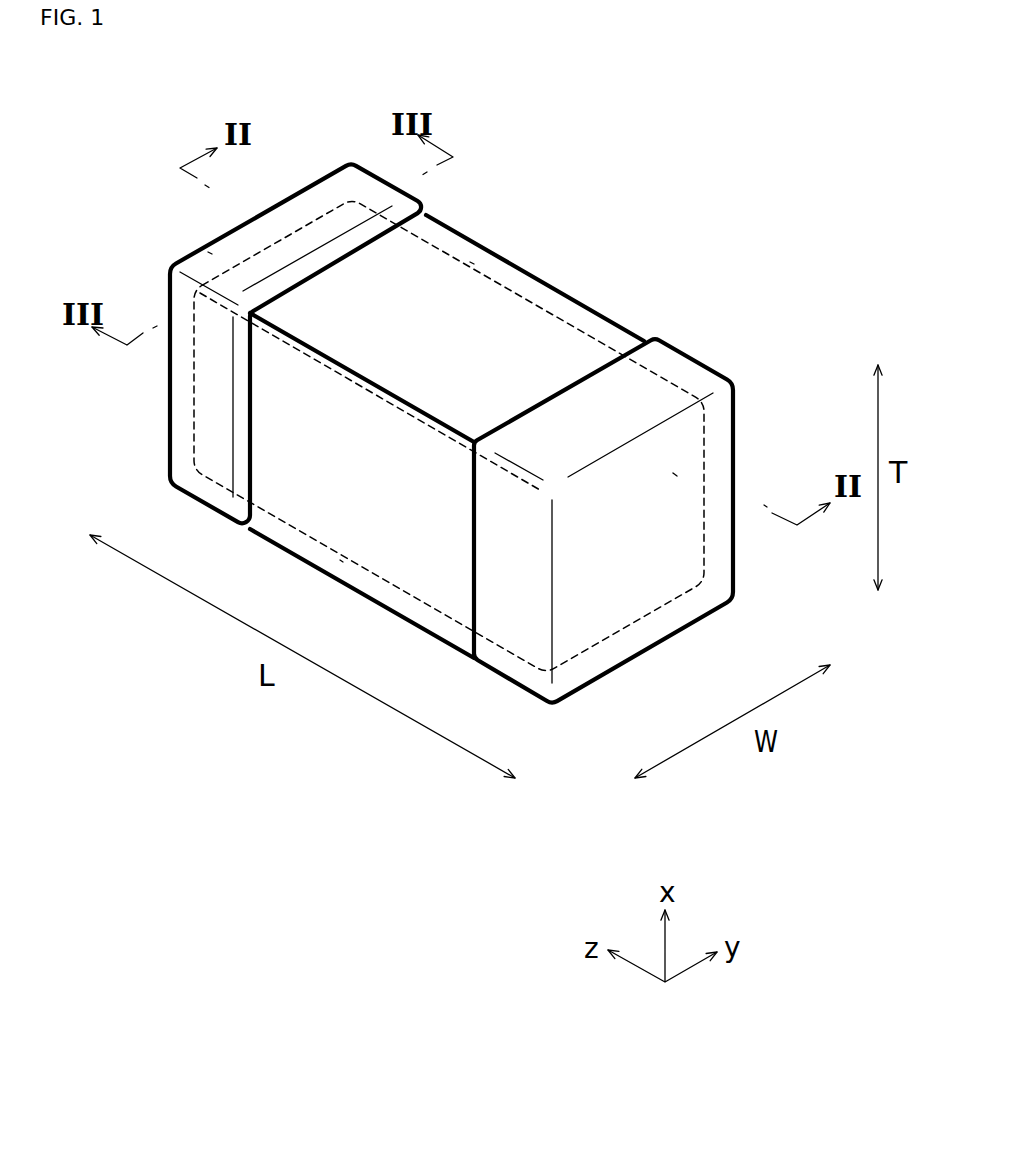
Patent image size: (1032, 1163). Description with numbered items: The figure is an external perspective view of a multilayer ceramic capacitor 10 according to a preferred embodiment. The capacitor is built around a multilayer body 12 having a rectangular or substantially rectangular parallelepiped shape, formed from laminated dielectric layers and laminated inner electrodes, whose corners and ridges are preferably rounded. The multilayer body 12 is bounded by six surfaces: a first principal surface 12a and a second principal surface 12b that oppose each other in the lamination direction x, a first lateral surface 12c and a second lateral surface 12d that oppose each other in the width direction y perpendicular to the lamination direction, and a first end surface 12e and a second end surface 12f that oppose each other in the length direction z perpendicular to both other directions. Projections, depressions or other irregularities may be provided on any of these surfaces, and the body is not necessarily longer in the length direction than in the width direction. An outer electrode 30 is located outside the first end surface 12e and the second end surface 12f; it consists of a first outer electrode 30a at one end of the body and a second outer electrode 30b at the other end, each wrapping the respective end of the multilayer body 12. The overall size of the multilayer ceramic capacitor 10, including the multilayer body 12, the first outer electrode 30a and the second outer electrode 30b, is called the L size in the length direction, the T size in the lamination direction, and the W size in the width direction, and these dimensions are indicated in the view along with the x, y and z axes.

The multilayer ceramic capacitor 10 is at (118, 181).
The multilayer body 12 is at (572, 297).
The first principal surface 12a is at (510, 305).
The second principal surface 12b is at (337, 533).
The first lateral surface 12c is at (425, 590).
The second lateral surface 12d is at (472, 260).
The first end surface 12e is at (210, 250).
The second end surface 12f is at (675, 475).
The outer electrode 30 is at (375, 835).
The first outer electrode 30a is at (320, 177).
The second outer electrode 30b is at (698, 352).